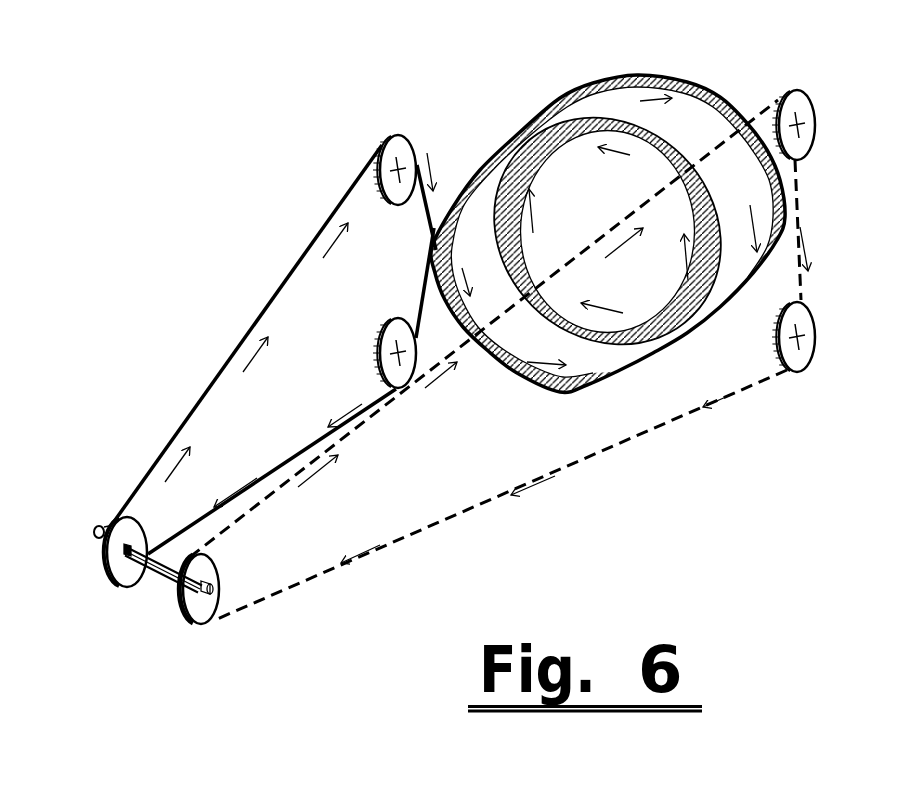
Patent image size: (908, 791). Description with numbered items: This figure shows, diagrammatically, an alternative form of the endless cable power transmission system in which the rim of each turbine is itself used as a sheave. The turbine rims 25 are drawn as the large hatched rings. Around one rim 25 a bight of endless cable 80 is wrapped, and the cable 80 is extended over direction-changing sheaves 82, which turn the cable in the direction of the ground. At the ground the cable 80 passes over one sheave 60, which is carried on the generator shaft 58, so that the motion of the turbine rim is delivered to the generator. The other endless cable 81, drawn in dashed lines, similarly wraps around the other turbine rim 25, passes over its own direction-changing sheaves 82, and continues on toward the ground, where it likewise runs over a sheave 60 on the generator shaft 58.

The turbine rim 25 is at (703, 72).
The generator shaft 58 is at (98, 530).
The sheave 60 is at (110, 567).
The endless cable 80 is at (232, 356).
The endless cable 81 is at (628, 447).
The direction-changing sheaves 82 is at (404, 156).